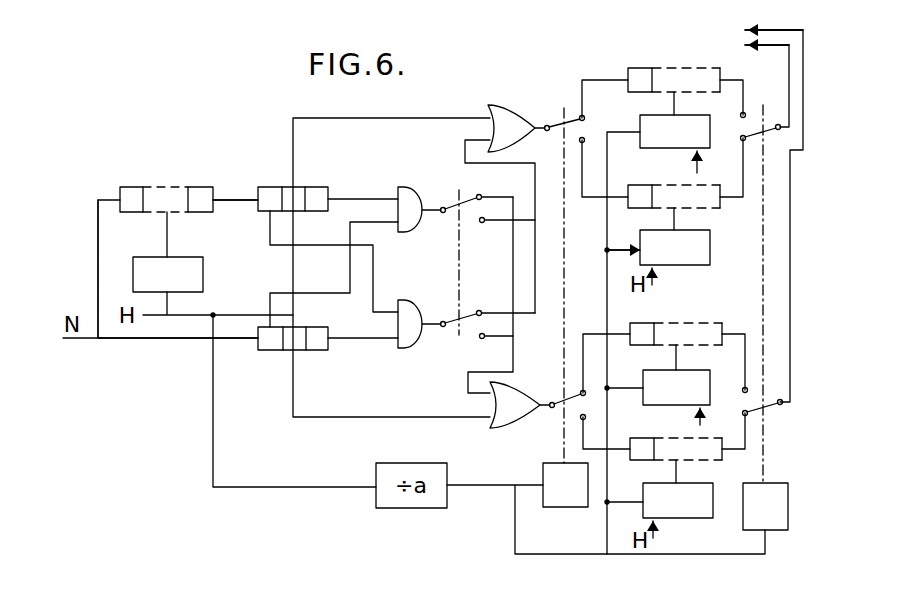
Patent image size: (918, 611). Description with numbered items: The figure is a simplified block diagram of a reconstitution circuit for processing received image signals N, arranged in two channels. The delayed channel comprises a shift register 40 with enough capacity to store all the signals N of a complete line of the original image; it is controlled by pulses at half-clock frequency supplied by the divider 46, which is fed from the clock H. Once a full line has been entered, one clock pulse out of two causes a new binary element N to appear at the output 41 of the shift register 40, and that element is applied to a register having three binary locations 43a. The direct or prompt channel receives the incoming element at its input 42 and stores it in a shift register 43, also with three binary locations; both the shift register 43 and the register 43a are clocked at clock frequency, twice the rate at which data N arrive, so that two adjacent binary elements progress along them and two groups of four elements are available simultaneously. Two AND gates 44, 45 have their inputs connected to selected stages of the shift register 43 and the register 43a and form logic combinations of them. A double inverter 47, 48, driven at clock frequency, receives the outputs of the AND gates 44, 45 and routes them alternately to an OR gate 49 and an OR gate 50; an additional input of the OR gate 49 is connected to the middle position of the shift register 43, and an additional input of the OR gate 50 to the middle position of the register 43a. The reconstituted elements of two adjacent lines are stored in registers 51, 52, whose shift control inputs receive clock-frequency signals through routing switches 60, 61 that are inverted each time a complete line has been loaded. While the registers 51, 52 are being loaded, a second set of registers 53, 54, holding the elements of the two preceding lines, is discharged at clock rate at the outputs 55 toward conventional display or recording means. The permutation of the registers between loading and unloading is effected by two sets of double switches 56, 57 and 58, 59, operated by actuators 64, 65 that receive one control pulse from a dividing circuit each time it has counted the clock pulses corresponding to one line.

The shift register 40 is at (137, 187).
The output of register 41 is at (249, 197).
The input of the direct channel 42 is at (183, 350).
The shift register 43 is at (318, 350).
The register having three binary locations 43a is at (317, 187).
The AND gate 44 is at (411, 348).
The AND gate 45 is at (410, 189).
The divider 46 is at (203, 275).
The double inverter 47 is at (458, 322).
The double inverter 48 is at (457, 210).
The OR gate 49 is at (500, 421).
The OR gate 50 is at (493, 110).
The register 51 is at (715, 333).
The register 52 is at (636, 74).
The register 53 is at (710, 456).
The register 54 is at (705, 205).
The output toward display or recording means 55 is at (738, 26).
The double switch 56 is at (558, 400).
The double switch 57 is at (560, 124).
The double switch 58 is at (773, 406).
The double switch 59 is at (768, 125).
The routing switch 60 is at (650, 384).
The routing switch 61 is at (648, 124).
The actuator 64 is at (568, 505).
The actuator 65 is at (785, 515).